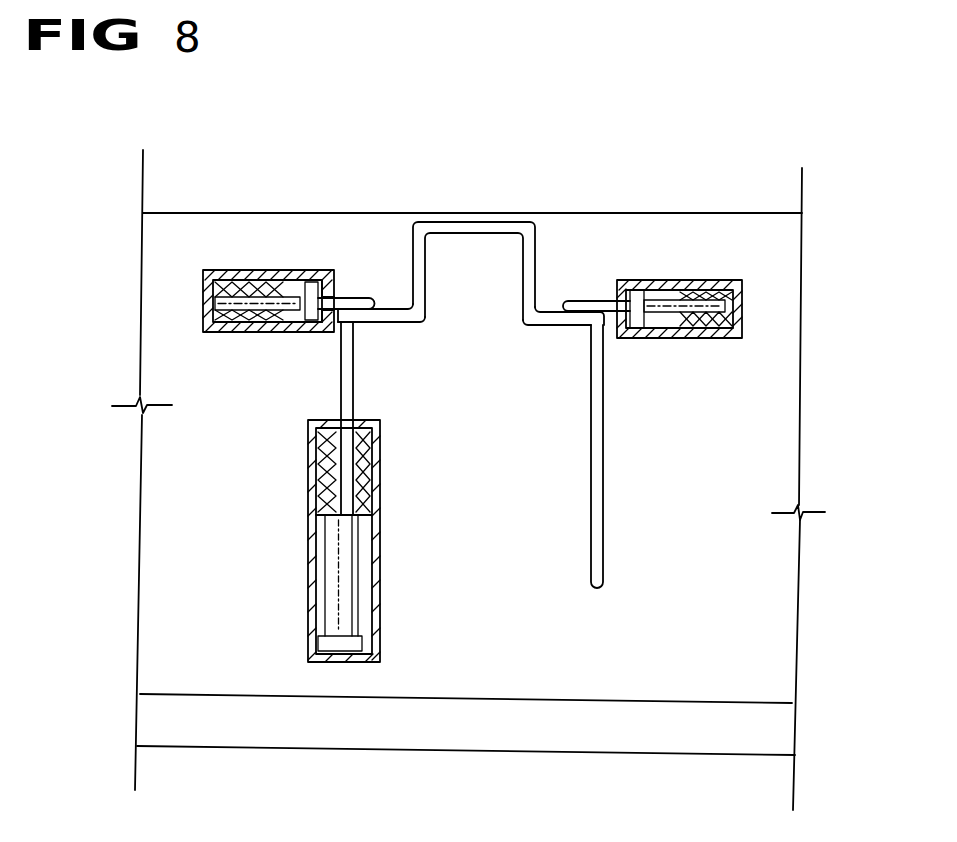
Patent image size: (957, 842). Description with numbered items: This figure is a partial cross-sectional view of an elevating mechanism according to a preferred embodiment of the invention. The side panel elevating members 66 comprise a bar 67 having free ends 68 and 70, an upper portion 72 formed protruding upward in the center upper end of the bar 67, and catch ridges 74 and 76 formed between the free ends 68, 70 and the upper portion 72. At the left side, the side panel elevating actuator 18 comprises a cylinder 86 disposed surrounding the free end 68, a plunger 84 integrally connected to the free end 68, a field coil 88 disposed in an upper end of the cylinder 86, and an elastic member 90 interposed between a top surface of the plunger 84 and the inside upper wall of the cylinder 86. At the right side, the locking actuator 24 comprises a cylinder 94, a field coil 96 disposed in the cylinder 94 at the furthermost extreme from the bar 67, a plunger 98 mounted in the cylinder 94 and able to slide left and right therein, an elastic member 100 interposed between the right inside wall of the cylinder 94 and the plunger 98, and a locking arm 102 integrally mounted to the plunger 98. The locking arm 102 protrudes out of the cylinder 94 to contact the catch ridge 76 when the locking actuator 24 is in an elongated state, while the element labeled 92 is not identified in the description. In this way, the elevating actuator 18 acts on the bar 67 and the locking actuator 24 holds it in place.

The side panel elevating actuator 18 is at (290, 566).
The locking actuator 24 is at (286, 254).
The side panel elevating members 66 is at (280, 483).
The bar 67 is at (493, 210).
The free end 68 is at (341, 375).
The free end 70 is at (605, 520).
The upper portion 72 is at (432, 226).
The catch ridge 74 is at (403, 308).
The catch ridge 76 is at (548, 304).
The plunger 84 is at (355, 594).
The cylinder 86 is at (380, 452).
The field coil 88 is at (373, 507).
The elastic member 90 is at (360, 428).
The right cylinder assembly 92 is at (710, 261).
The cylinder 94 is at (705, 338).
The field coil 96 is at (745, 298).
The plunger 98 is at (657, 290).
The elastic member 100 is at (735, 303).
The locking arm 102 is at (600, 300).